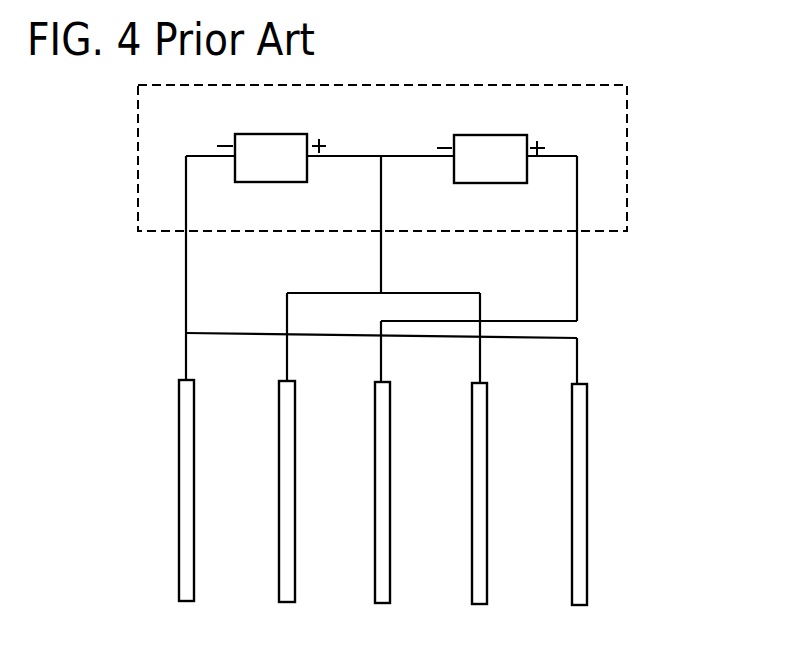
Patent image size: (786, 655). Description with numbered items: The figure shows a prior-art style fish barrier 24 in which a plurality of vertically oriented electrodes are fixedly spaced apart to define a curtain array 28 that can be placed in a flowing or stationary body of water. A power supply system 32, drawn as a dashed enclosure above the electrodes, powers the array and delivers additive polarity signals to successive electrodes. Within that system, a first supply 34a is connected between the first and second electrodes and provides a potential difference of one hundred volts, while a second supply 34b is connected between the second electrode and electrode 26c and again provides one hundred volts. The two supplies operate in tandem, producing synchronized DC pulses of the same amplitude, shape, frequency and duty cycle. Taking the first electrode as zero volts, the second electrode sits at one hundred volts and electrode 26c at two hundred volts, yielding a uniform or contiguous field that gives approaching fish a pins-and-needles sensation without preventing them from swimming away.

The fish barrier 24 is at (447, 167).
The power supply system 32 is at (627, 203).
The supply 34a is at (262, 182).
The supply 34b is at (484, 183).
The curtain array 28 is at (311, 512).
The electrode 26c is at (179, 541).